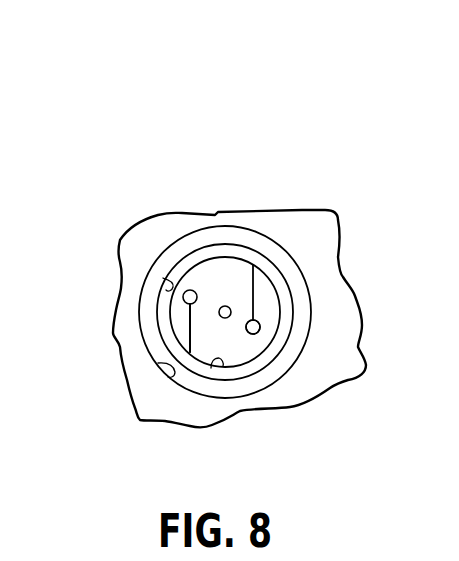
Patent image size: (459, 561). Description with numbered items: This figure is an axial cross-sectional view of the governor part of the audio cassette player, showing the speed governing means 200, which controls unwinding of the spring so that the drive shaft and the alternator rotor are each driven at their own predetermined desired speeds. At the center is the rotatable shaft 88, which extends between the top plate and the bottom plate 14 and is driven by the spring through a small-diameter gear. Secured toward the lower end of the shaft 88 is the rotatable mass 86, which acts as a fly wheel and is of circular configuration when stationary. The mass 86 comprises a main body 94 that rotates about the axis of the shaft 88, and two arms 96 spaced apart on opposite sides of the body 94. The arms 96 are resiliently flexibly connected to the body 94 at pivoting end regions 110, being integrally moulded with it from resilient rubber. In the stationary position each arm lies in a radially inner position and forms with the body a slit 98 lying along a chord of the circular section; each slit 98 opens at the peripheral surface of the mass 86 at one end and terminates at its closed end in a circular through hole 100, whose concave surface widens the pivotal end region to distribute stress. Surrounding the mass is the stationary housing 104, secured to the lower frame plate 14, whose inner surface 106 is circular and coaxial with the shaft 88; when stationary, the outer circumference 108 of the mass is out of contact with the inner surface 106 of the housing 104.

The speed governing means 200 is at (270, 127).
The bottom plate 14 is at (312, 220).
The stationary housing 104 is at (185, 266).
The pivoting end regions 110 is at (163, 278).
The arms 96 is at (175, 312).
The slit 98 is at (189, 326).
The inner surface 106 is at (158, 363).
The outer circumference 108 is at (211, 368).
The main body 94 is at (227, 348).
The circular through hole 100 is at (191, 290).
The rotatable shaft 88 is at (225, 306).
The rotatable mass 86 is at (272, 307).